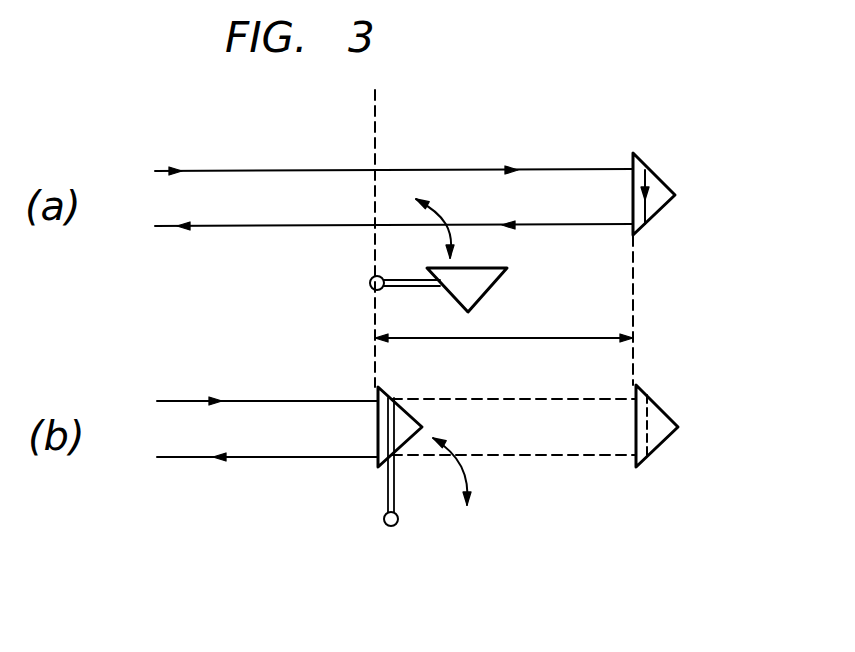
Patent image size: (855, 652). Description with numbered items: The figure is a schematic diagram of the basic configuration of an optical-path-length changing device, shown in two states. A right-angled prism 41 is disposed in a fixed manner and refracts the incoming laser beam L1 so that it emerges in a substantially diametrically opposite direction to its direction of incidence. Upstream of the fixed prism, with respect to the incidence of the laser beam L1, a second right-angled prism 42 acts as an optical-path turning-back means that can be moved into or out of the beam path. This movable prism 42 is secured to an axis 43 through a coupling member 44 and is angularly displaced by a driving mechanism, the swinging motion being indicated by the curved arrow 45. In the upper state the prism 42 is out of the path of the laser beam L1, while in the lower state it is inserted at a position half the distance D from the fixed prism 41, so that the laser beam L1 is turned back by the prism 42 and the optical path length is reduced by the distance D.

The right-angled prism 41 is at (660, 180).
The right-angled prism 42 is at (492, 272).
The axis 43 is at (370, 281).
The coupling member 44 is at (412, 287).
The movement direction arrow 45 is at (438, 207).
The laser beam L1 is at (285, 170).